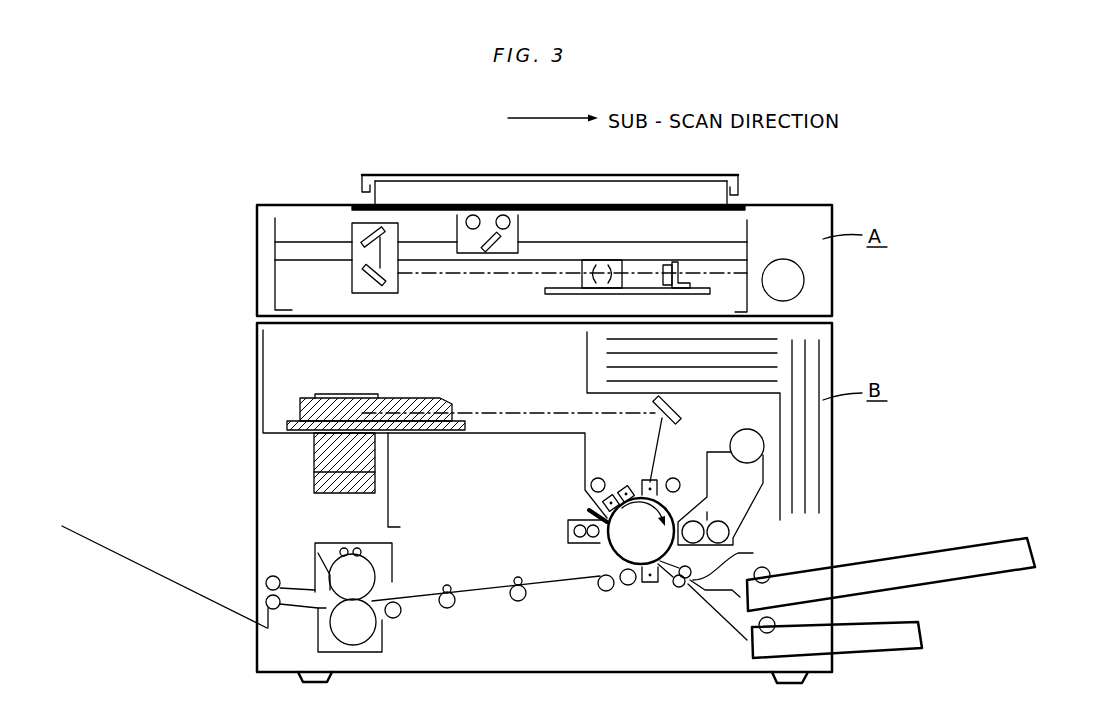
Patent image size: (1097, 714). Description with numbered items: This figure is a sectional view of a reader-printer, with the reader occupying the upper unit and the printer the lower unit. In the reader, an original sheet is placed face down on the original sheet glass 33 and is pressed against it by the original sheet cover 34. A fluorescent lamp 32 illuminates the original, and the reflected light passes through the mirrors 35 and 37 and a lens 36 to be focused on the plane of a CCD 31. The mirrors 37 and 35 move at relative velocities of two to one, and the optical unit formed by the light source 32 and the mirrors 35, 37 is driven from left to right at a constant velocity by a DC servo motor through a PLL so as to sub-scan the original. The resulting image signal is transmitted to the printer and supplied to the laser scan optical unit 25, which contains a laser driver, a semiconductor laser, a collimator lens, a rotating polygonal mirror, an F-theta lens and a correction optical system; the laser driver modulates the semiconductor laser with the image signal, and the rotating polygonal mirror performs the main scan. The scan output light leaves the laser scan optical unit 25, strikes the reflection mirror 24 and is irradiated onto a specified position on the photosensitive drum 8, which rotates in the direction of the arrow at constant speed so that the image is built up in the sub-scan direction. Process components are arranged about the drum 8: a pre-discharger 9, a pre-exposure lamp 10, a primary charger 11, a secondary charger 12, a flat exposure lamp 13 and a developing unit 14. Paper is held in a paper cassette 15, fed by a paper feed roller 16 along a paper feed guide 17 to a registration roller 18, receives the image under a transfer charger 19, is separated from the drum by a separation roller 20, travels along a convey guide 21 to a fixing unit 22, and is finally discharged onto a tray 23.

The photosensitive drum 8 is at (612, 548).
The pre-discharger 9 is at (618, 487).
The pre-exposure lamp 10 is at (600, 478).
The primary charger 11 is at (628, 490).
The secondary charger 12 is at (655, 480).
The flat exposure lamp 13 is at (680, 479).
The developing unit 14 is at (737, 497).
The paper cassette 15 is at (803, 574).
The paper feed roller 16 is at (764, 567).
The paper feed guide 17 is at (722, 595).
The registration roller 18 is at (679, 588).
The transfer charger 19 is at (648, 584).
The separation roller 20 is at (626, 586).
The convey guide 21 is at (547, 586).
The fixing unit 22 is at (363, 572).
The tray 23 is at (165, 578).
The reflection mirror 24 is at (680, 412).
The laser scan optical unit 25 is at (420, 398).
The CCD 31 is at (683, 273).
The fluorescent lamp 32 is at (503, 214).
The original sheet glass 33 is at (617, 205).
The original sheet cover 34 is at (713, 176).
The mirror 35 is at (366, 231).
The lens 36 is at (604, 266).
The mirror 37 is at (498, 250).